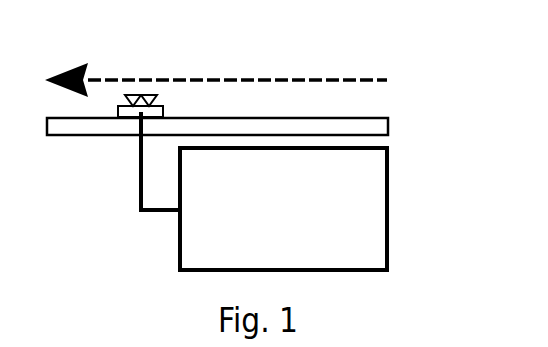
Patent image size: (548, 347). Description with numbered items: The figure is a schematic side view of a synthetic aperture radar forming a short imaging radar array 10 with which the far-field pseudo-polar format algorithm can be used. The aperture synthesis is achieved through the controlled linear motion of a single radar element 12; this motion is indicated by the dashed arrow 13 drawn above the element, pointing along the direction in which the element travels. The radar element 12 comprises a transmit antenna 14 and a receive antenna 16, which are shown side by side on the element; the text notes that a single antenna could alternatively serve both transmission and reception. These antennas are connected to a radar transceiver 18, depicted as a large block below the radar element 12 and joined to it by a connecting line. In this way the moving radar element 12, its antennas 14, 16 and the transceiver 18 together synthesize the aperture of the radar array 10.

The radar array 10 is at (406, 100).
The radar element 12 is at (163, 106).
The dashed arrow 13 is at (278, 80).
The transmit antenna 14 is at (132, 94).
The receive antenna 16 is at (150, 94).
The radar transceiver 18 is at (390, 212).